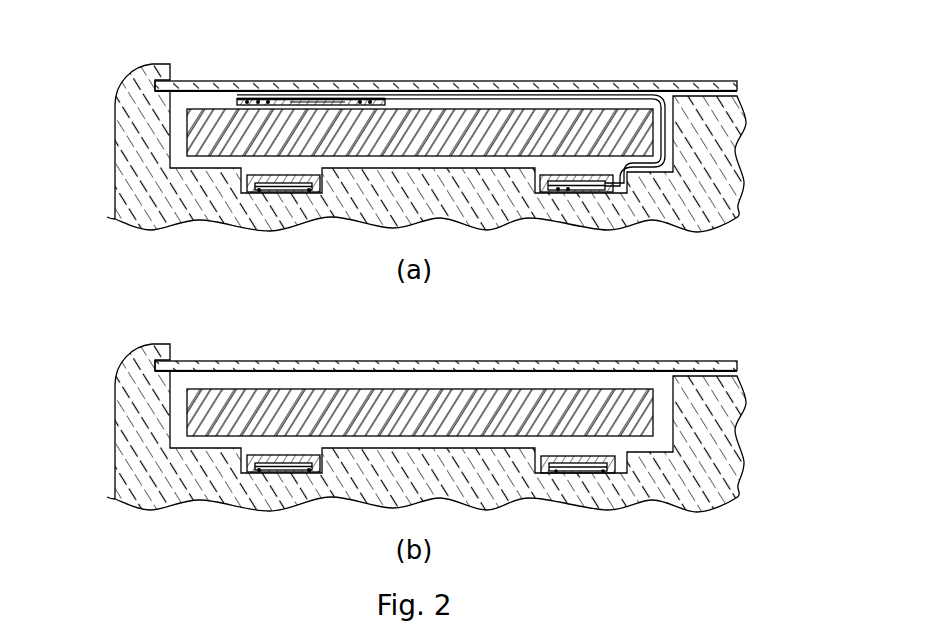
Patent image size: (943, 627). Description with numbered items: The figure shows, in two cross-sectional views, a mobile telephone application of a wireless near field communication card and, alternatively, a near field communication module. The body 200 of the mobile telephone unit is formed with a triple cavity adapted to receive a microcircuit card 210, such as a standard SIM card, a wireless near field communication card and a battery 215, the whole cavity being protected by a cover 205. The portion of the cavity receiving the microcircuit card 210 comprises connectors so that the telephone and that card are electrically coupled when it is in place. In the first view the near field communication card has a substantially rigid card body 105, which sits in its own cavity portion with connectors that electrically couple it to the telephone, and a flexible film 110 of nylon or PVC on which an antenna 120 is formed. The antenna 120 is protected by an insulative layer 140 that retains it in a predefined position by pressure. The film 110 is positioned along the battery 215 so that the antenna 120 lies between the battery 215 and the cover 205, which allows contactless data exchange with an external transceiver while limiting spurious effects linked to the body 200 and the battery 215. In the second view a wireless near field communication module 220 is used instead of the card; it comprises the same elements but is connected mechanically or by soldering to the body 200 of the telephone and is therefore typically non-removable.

The card body 105 is at (577, 192).
The flexible film 110 is at (617, 92).
The antenna 120 is at (253, 100).
The insulative layer 140 is at (318, 102).
The body of the mobile telephone unit 200 is at (130, 178).
The cover 205 is at (423, 84).
The microcircuit card 210 is at (243, 193).
The battery 215 is at (195, 137).
The wireless near field communication module 220 is at (547, 473).